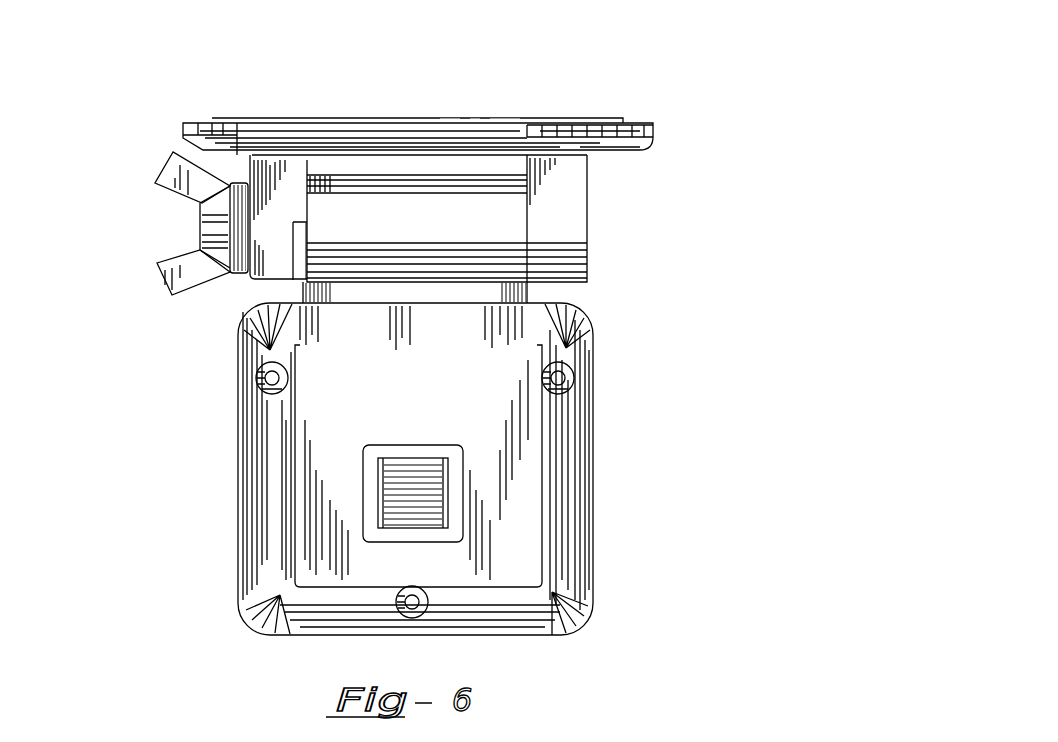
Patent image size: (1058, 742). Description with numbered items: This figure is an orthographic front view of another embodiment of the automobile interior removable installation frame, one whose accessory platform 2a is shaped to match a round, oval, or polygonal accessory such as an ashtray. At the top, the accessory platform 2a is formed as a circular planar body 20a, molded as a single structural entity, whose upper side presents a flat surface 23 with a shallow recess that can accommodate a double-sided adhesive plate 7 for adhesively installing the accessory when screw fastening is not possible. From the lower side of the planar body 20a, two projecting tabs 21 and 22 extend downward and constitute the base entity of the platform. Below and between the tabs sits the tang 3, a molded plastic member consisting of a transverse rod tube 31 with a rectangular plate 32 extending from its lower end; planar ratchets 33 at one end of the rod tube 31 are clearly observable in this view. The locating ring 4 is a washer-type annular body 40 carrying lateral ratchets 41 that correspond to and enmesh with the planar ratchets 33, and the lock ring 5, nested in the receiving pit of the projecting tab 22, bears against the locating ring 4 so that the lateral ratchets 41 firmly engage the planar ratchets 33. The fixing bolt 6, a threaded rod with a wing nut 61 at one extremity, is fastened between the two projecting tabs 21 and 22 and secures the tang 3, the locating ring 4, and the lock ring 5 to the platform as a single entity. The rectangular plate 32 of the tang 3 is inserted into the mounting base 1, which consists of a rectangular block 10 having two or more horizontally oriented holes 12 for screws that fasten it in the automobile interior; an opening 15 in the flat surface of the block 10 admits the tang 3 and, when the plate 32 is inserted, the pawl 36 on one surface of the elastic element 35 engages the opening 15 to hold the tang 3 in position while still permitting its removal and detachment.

The mounting base 1 is at (421, 491).
The accessory platform 2a is at (469, 88).
The tang 3 is at (469, 179).
The locating ring 4 is at (290, 284).
The lock ring 5 is at (218, 278).
The fixing bolt 6 is at (203, 225).
The double-sided adhesive plate 7 is at (397, 113).
The block 10 is at (593, 512).
The horizontally oriented holes 12 is at (575, 378).
The opening 15 is at (465, 518).
The circular planar body 20a is at (475, 136).
The projecting tab 21 is at (237, 190).
The projecting tab 22 is at (567, 222).
The flat surface 23 is at (633, 128).
The transverse rod tube 31 is at (380, 202).
The rectangular plate 32 is at (528, 290).
The planar ratchets 33 is at (262, 208).
The elastic element 35 is at (448, 497).
The pawl 36 is at (390, 500).
The annular body 40 is at (295, 242).
The lateral ratchets 41 is at (310, 190).
The wing nut 61 is at (172, 298).